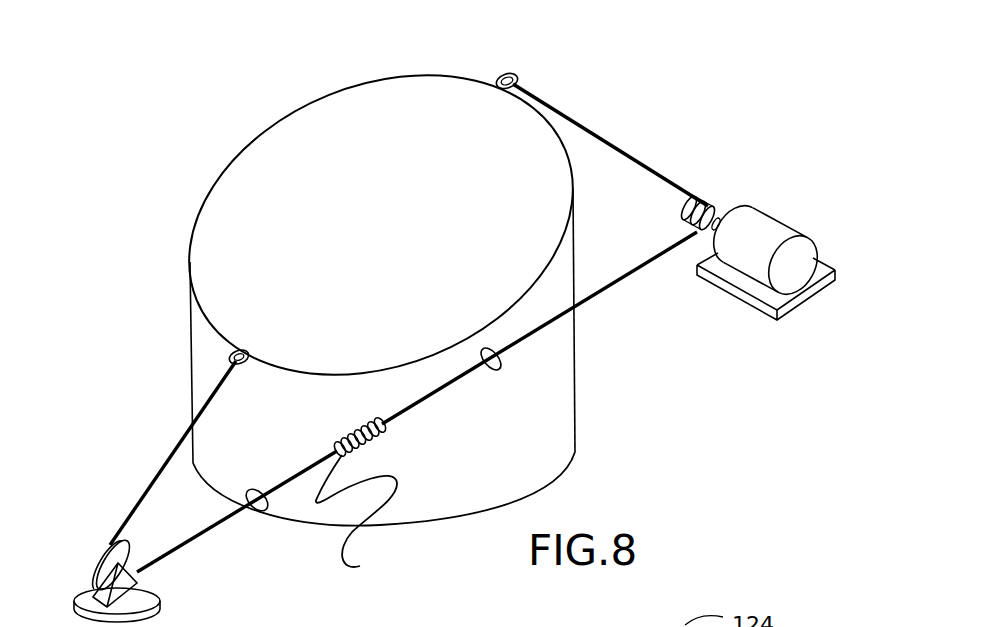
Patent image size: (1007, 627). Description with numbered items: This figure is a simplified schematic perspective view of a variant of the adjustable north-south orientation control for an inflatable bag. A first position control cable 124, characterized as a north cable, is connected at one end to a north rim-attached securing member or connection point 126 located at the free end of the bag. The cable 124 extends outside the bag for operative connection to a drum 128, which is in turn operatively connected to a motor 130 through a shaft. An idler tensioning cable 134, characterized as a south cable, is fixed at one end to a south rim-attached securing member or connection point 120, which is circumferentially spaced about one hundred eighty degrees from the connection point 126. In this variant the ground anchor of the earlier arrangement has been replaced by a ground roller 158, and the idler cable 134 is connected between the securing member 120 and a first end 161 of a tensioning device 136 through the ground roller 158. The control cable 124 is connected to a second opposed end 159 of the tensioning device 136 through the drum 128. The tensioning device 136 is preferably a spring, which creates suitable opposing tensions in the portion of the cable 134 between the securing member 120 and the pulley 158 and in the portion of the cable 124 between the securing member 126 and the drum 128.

The connection point 120 is at (241, 353).
The first position control cable 124 is at (617, 138).
The connection point 126 is at (515, 79).
The drum 128 is at (710, 203).
The motor 130 is at (760, 228).
The idler tensioning cable 134 is at (163, 457).
The tensioning device 136 is at (363, 439).
The ground roller 158 is at (143, 583).
The second opposed end 159 is at (385, 422).
The first end 161 is at (365, 514).